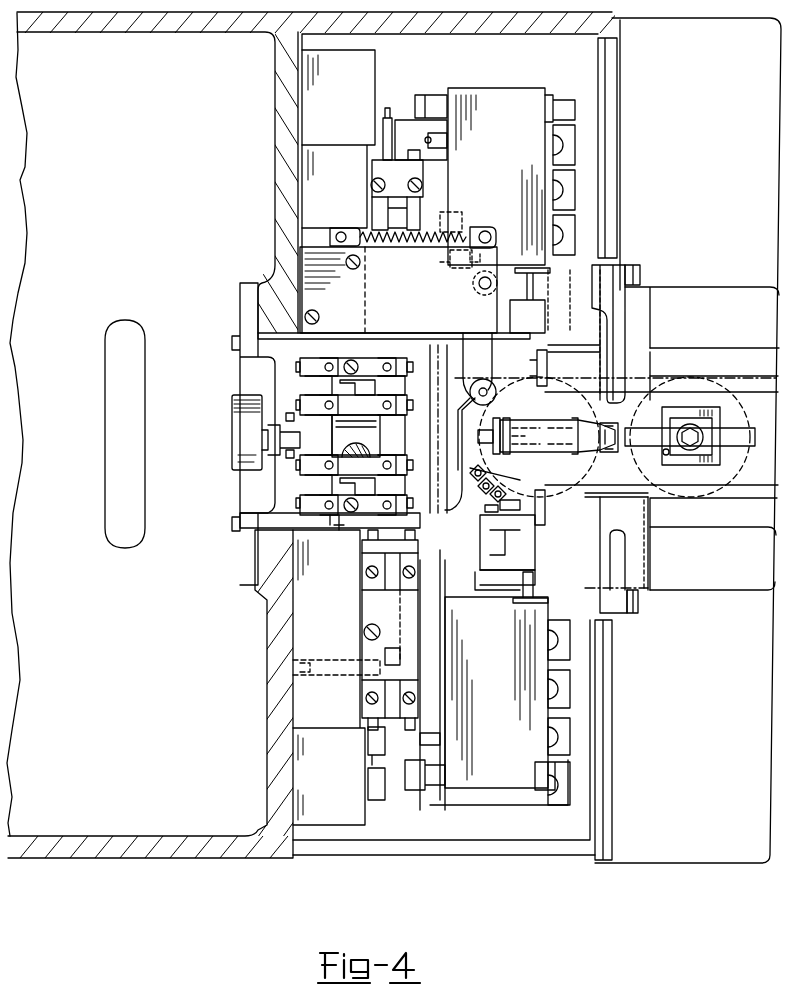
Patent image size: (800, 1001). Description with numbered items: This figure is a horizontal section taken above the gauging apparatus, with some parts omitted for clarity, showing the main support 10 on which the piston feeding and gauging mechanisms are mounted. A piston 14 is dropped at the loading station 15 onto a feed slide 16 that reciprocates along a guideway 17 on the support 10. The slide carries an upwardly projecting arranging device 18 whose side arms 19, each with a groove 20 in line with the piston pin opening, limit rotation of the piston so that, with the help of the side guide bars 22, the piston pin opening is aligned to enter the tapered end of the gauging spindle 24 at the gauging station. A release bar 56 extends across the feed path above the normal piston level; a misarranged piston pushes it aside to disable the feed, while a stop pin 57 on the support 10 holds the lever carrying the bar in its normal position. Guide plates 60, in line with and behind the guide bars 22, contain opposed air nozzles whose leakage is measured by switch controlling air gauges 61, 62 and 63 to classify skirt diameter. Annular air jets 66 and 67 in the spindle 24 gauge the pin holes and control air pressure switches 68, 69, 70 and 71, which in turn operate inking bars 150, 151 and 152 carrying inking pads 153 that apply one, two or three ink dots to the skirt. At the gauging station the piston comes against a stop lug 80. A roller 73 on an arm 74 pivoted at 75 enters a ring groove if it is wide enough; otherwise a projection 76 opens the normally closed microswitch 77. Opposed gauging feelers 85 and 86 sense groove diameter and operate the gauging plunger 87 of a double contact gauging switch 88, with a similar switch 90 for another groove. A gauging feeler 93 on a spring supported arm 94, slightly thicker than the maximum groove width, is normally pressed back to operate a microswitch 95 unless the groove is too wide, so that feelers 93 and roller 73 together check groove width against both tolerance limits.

The main support 10 is at (265, 698).
The piston 14 is at (598, 473).
The loading station 15 is at (698, 287).
The feed slide 16 is at (740, 447).
The guideway 17 is at (748, 489).
The arranging device 18 is at (720, 425).
The side arms 19 is at (690, 407).
The groove 20 is at (664, 455).
The side guide bars 22 is at (738, 358).
The gauging spindle 24 is at (538, 420).
The release bar 56 is at (615, 268).
The stop pin 57 is at (640, 276).
The guide plates 60 is at (585, 382).
The switch controlling air gauge 61 is at (574, 238).
The switch controlling air gauge 62 is at (574, 193).
The switch controlling air gauge 63 is at (574, 150).
The annular air jet 66 is at (505, 418).
The annular air jet 67 is at (590, 422).
The gauging switch 68 is at (569, 797).
The gauging switch 69 is at (569, 743).
The gauging switch 70 is at (569, 695).
The gauging switch 71 is at (569, 647).
The roller 73 is at (470, 382).
The arm 74 is at (470, 320).
The pivot 75 is at (480, 288).
The projection 76 is at (468, 265).
The microswitch 77 is at (468, 232).
The stop lug 80 is at (470, 398).
The gauging feeler 85 is at (545, 512).
The gauging feeler 86 is at (545, 372).
The gauging plunger 87 is at (533, 585).
The gauging switch 88 is at (488, 800).
The gauging switch 90 is at (495, 88).
The gauging feeler 93 is at (468, 460).
The spring supported arm 94 is at (440, 440).
The microswitch 95 is at (280, 400).
The inking bar 150 is at (500, 502).
The inking bar 151 is at (490, 496).
The inking bar 152 is at (478, 488).
The inking pads 153 is at (490, 478).